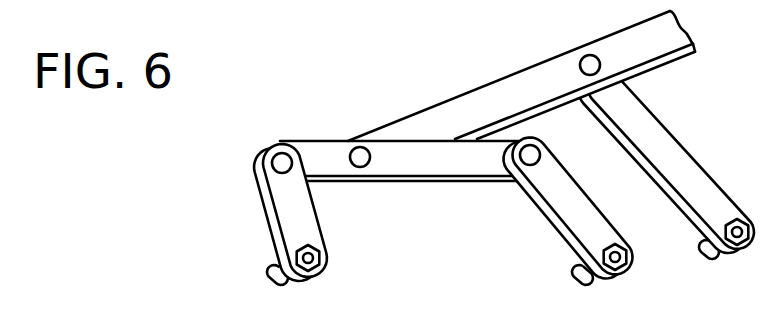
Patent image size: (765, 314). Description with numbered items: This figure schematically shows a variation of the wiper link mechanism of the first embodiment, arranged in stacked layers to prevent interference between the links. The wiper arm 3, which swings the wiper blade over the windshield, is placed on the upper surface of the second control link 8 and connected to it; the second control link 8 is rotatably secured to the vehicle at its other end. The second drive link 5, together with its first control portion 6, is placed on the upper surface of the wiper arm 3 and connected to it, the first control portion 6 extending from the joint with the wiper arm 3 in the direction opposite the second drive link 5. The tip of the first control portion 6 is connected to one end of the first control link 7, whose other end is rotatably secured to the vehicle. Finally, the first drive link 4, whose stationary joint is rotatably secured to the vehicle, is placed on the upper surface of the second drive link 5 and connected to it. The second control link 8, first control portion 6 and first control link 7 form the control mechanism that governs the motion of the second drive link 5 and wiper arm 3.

The wiper arm 3 is at (503, 85).
The first drive link 4 is at (302, 210).
The second drive link 5 is at (340, 167).
The first control portion 6 is at (440, 158).
The first control link 7 is at (550, 195).
The second control link 8 is at (683, 183).